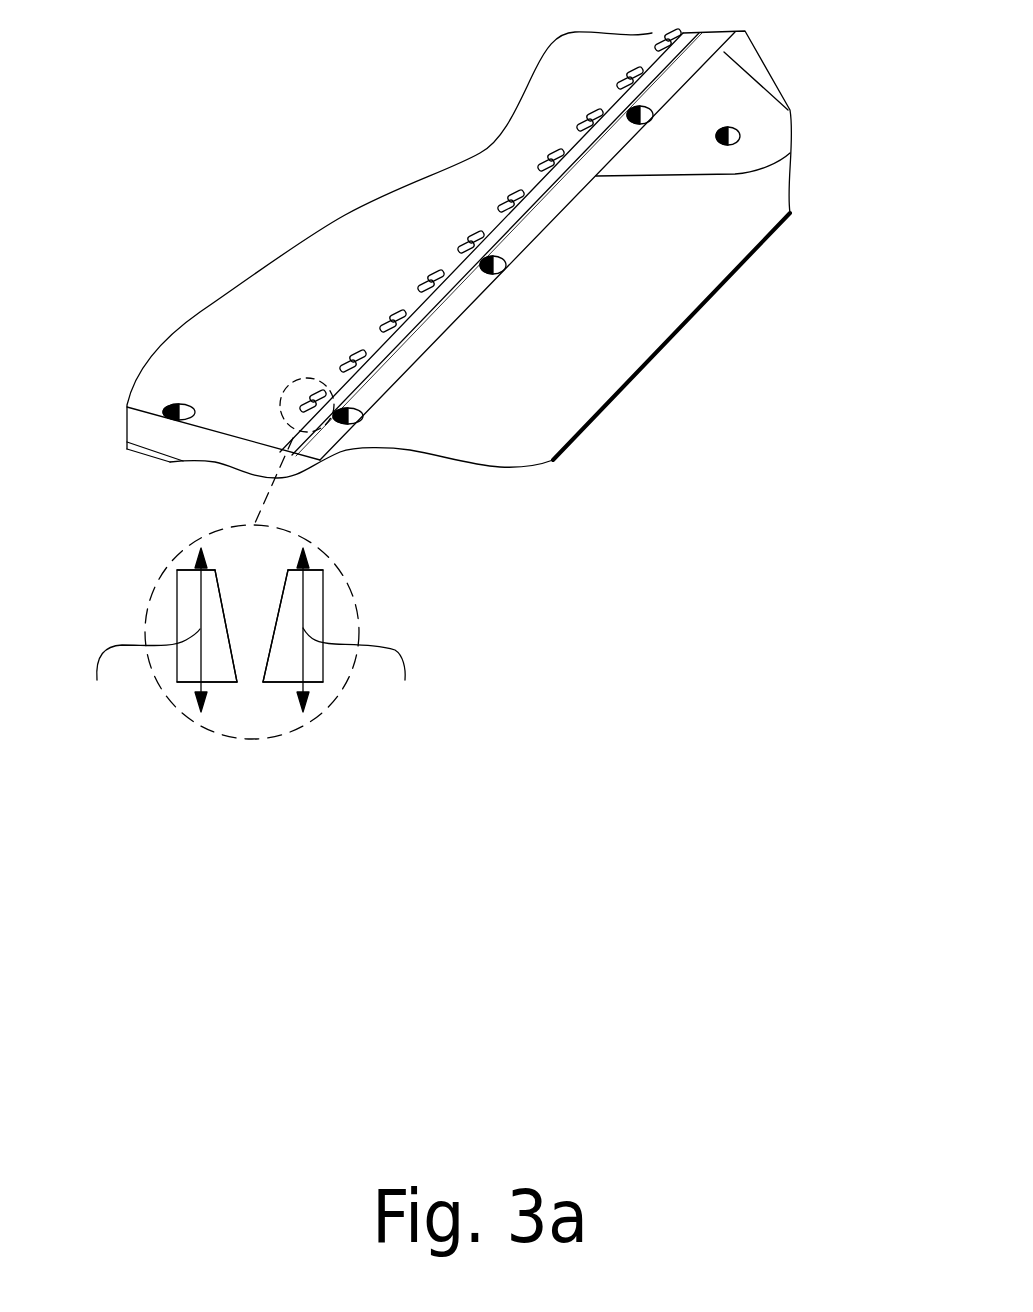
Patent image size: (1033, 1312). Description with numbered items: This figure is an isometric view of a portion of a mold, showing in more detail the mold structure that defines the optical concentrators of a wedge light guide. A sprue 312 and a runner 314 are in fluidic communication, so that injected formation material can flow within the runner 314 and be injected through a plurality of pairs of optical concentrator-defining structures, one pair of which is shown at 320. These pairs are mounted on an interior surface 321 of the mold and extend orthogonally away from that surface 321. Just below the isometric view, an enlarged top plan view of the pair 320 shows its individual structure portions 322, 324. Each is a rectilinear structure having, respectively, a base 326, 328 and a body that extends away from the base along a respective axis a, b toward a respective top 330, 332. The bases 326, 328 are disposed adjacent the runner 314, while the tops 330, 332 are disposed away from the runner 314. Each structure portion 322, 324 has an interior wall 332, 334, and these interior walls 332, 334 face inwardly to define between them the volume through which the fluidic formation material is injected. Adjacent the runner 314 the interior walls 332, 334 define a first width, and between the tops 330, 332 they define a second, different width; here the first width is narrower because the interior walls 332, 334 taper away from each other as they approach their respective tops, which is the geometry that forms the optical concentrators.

The sprue 312 is at (497, 254).
The runner 314 is at (532, 220).
The pair of optical concentrator-defining structures 320 is at (297, 379).
The interior surface 321 is at (353, 297).
The individual structure portion 322 is at (164, 589).
The individual structure portion 324 is at (341, 590).
The base 326 is at (193, 684).
The base 328 is at (313, 684).
The top 330 is at (188, 568).
The top / interior wall 332 is at (303, 569).
The interior wall 334 is at (280, 602).